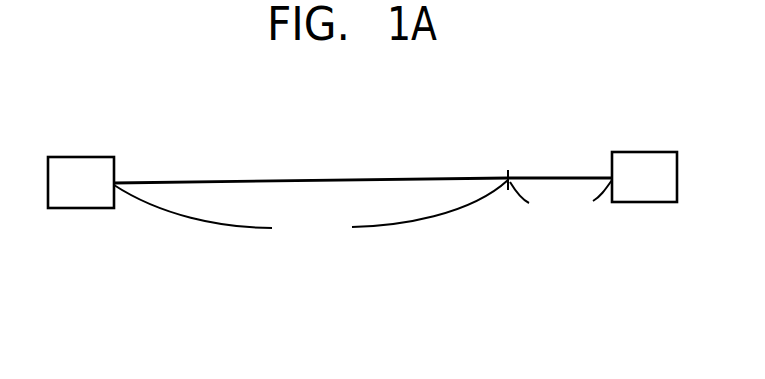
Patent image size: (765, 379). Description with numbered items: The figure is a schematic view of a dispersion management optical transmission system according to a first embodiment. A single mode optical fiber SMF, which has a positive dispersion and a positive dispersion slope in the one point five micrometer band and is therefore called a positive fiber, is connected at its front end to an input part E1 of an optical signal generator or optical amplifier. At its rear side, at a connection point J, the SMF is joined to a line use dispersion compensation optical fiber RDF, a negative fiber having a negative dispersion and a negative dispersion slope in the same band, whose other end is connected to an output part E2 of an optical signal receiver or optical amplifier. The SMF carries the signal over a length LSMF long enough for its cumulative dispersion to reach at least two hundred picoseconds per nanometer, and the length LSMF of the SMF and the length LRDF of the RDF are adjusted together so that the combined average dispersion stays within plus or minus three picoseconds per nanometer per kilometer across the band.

The input part E1 is at (82, 199).
The output part E2 is at (645, 193).
The single mode optical fiber SMF is at (311, 180).
The line use dispersion compensation optical fiber RDF is at (557, 177).
The connection point J is at (507, 163).
The length of the SMF LSMF is at (311, 214).
The length of the RDF LRDF is at (561, 208).